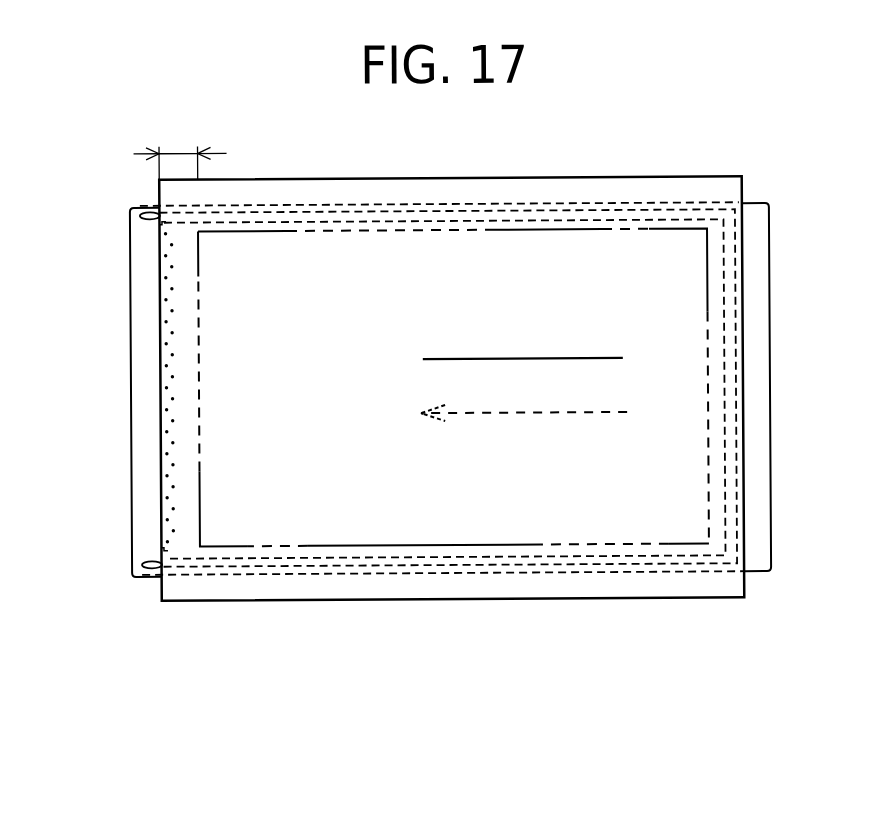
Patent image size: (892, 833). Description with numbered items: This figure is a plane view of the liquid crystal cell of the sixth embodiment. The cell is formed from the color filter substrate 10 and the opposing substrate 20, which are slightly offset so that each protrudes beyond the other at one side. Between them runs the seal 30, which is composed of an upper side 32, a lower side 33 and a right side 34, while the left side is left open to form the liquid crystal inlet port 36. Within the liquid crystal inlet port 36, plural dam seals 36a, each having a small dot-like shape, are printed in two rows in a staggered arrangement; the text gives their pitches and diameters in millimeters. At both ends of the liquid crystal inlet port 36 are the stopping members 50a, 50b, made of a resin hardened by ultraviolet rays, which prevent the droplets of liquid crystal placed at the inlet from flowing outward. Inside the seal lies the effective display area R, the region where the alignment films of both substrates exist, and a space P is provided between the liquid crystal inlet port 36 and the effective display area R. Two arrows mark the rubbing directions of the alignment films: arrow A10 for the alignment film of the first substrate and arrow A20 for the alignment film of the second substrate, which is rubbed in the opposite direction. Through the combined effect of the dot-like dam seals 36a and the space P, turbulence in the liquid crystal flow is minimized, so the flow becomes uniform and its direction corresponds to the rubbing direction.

The color filter substrate 10 is at (773, 577).
The substrate 20 is at (727, 605).
The seal 30 is at (590, 568).
The upper side 32 is at (533, 215).
The lower side 33 is at (655, 561).
The right side 34 is at (733, 290).
The liquid crystal inlet port 36 is at (162, 538).
The dam seals 36a is at (170, 317).
The stopping member 50a is at (147, 211).
The stopping member 50b is at (155, 573).
The effective display area R is at (387, 547).
The space P is at (179, 148).
The arrow A20 is at (508, 357).
The arrow A10 is at (532, 415).